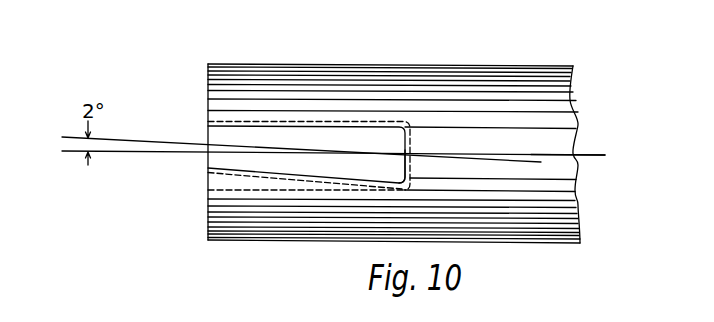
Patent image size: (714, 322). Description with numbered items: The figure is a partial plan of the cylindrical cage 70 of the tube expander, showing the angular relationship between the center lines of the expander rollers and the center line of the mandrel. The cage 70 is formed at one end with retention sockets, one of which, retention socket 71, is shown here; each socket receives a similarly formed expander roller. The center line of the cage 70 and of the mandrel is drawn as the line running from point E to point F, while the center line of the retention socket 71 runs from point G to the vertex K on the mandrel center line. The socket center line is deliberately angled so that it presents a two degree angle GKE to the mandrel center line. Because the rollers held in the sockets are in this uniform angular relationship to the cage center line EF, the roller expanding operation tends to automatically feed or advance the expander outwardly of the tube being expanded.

The cylindrical cage 70 is at (440, 66).
The retention socket 71 is at (309, 156).
The center line end point E is at (67, 149).
The center line end point F is at (578, 155).
The socket center line end point G is at (293, 141).
The angle vertex K is at (402, 161).